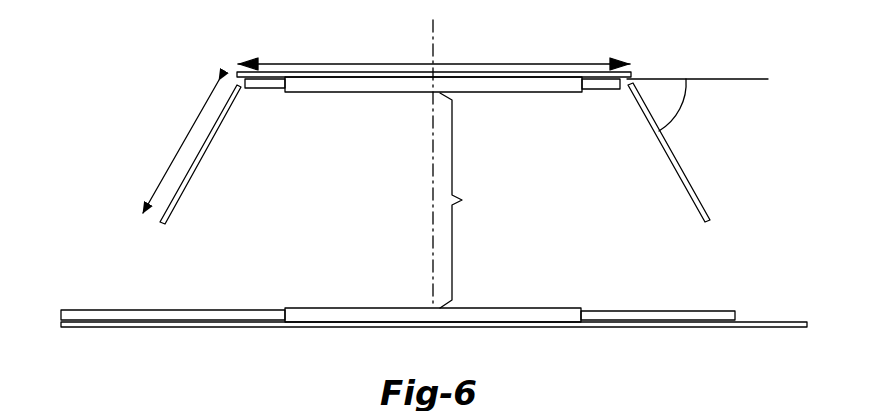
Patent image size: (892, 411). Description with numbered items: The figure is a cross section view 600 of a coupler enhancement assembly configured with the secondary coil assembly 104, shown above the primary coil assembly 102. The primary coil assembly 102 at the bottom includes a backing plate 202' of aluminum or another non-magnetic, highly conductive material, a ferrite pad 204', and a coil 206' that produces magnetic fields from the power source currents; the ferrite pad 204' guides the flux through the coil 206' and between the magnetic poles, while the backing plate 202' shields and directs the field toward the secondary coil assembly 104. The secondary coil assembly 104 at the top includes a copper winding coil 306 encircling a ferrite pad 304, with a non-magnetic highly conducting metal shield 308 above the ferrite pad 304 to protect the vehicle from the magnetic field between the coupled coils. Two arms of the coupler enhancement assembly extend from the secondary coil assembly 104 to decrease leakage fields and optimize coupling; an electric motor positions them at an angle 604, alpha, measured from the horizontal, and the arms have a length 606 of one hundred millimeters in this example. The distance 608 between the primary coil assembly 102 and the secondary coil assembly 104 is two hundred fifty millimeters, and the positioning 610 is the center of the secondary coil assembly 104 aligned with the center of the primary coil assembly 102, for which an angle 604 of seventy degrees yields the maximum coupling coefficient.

The cross section view 600 is at (116, 58).
The secondary coil assembly 104 is at (268, 35).
The positioning 610 is at (432, 33).
The metal shield 308 is at (528, 76).
The copper winding coil 306 is at (327, 93).
The ferrite pad 304 is at (603, 86).
The angle 604 is at (687, 94).
The length 606 is at (180, 145).
The distance 608 is at (475, 200).
The backing plate 202' is at (173, 352).
The coil 206' is at (433, 288).
The ferrite pad 204' is at (658, 287).
The primary coil assembly 102 is at (543, 332).